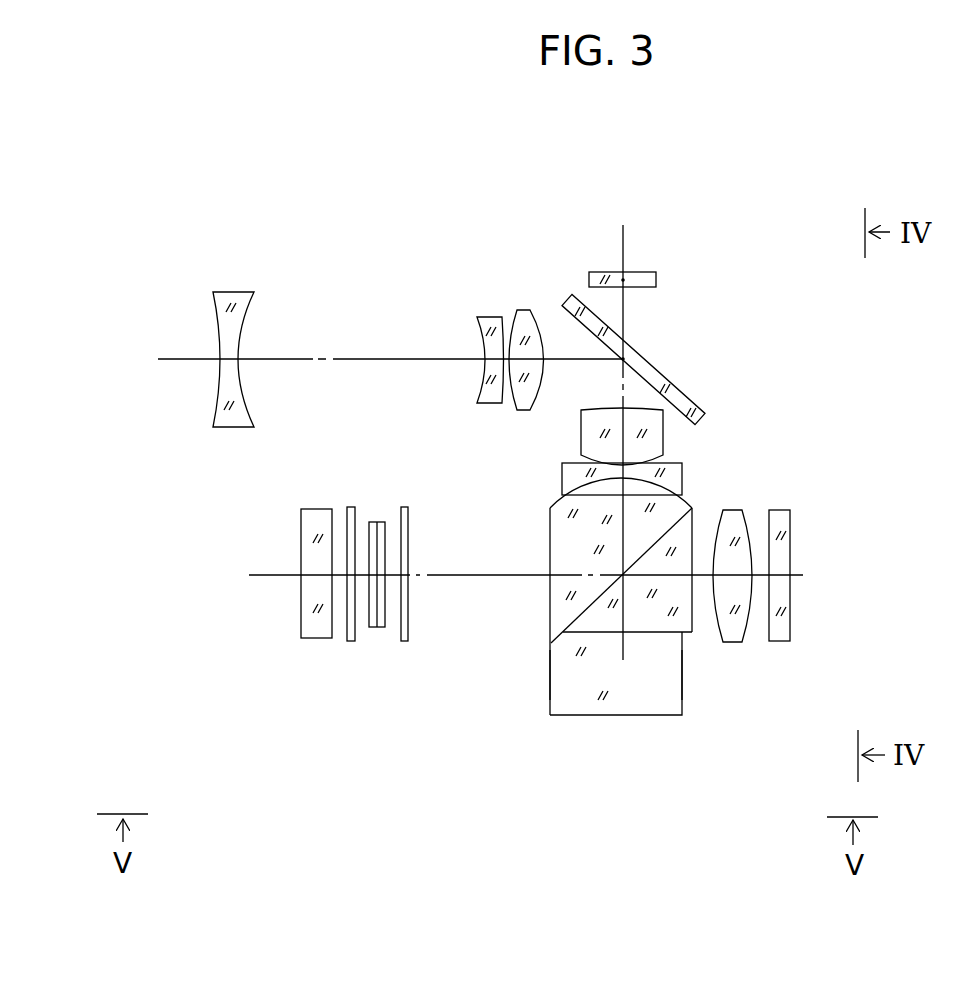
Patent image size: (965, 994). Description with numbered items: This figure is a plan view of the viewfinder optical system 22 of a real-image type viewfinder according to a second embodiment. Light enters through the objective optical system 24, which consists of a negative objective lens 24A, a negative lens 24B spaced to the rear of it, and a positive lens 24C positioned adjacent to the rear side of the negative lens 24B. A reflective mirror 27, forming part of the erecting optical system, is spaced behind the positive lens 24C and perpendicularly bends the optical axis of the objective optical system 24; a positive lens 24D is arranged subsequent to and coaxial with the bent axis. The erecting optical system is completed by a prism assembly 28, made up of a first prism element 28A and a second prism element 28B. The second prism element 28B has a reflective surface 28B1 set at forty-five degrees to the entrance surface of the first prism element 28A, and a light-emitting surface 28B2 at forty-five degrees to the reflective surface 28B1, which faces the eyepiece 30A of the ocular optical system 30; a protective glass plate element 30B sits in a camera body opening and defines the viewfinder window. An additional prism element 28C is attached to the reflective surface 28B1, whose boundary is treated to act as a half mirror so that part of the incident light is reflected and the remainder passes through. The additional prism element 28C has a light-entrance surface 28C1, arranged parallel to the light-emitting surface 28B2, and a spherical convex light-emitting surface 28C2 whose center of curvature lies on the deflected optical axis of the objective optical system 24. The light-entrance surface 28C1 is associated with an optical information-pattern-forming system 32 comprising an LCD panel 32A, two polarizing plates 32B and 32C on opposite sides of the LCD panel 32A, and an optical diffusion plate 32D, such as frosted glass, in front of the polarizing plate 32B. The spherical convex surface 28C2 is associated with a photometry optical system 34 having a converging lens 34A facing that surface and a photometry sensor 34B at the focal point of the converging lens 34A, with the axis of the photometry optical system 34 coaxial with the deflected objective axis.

The viewfinder optical system 22 is at (588, 218).
The objective optical system 24 is at (381, 248).
The negative objective lens 24A is at (232, 291).
The negative lens 24B is at (490, 316).
The positive lens 24C is at (525, 309).
The positive lens 24D is at (683, 481).
The reflective mirror 27 is at (660, 367).
The prism assembly 28 is at (627, 724).
The first prism element 28A is at (567, 677).
The second prism element 28B is at (652, 618).
The reflective surface 28B1 is at (603, 597).
The light-emitting surface 28B2 is at (693, 613).
The additional prism element 28C is at (567, 555).
The light-entrance surface 28C1 is at (550, 610).
The spherical convex light-emitting surface 28C2 is at (583, 480).
The ocular optical system 30 is at (808, 626).
The eyepiece 30A is at (733, 642).
The protective glass plate element 30B is at (792, 538).
The optical information-pattern-forming system 32 is at (367, 653).
The LCD panel 32A is at (377, 521).
The polarizing plate 32B is at (352, 507).
The polarizing plate 32C is at (404, 642).
The optical diffusion plate 32D is at (301, 604).
The photometry optical system 34 is at (645, 260).
The converging lens 34A is at (650, 435).
The photometry sensor 34B is at (657, 278).